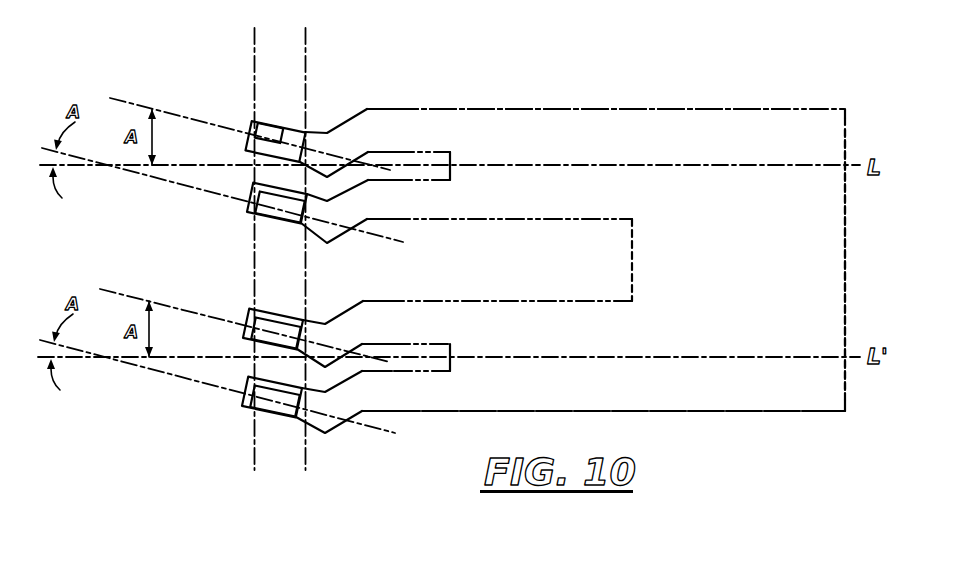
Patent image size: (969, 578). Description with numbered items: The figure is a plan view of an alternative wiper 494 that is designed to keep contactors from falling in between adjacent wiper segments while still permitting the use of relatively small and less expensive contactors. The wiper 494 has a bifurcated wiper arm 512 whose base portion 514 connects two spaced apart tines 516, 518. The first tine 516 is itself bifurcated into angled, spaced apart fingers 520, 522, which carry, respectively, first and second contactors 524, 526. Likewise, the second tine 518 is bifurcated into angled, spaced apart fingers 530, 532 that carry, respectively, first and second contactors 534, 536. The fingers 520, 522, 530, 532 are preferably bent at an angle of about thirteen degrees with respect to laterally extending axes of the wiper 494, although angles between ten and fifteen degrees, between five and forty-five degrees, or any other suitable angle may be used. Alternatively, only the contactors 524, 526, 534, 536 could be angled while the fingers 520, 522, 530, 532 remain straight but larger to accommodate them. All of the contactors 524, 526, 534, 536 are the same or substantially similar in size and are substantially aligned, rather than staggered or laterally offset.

The wiper 494 is at (650, 63).
The bifurcated wiper arm 512 is at (787, 109).
The base portion 514 is at (805, 282).
The first tine 516 is at (507, 122).
The second tine 518 is at (677, 378).
The finger 520 is at (251, 133).
The finger 522 is at (251, 205).
The first contactor 524 is at (284, 121).
The second contactor 526 is at (291, 218).
The finger 530 is at (252, 325).
The finger 532 is at (251, 392).
The first contactor 534 is at (306, 323).
The second contactor 536 is at (298, 412).